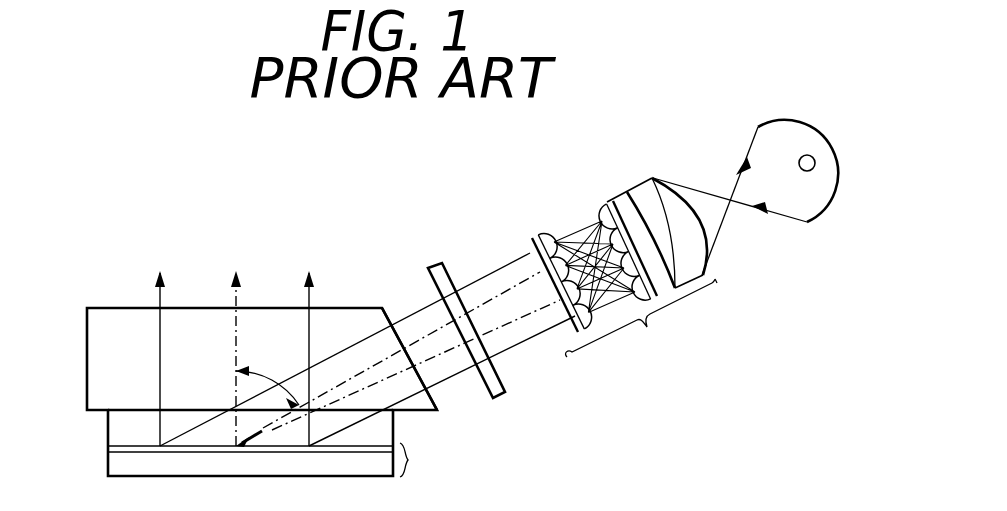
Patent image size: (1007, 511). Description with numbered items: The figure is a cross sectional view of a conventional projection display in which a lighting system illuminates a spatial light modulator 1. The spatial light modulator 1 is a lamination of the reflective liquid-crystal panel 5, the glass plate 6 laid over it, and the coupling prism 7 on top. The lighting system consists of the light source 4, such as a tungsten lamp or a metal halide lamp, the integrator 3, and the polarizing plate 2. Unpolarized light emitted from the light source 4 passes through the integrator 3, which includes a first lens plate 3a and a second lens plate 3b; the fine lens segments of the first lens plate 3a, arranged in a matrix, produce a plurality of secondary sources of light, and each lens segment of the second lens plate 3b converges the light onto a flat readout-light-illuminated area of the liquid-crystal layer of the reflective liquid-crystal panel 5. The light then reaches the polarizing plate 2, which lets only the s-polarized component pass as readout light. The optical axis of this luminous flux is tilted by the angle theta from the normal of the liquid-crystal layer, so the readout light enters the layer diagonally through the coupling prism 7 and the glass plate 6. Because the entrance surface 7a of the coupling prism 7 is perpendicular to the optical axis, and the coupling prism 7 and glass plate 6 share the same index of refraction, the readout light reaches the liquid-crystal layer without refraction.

The spatial light modulator 1 is at (119, 304).
The polarizing plate 2 is at (504, 393).
The integrator 3 is at (635, 268).
The first lens plate 3a is at (614, 194).
The second lens plate 3b is at (532, 235).
The light source 4 is at (816, 219).
The reflective liquid-crystal panel 5 is at (409, 460).
The glass plate 6 is at (387, 431).
The coupling prism 7 is at (338, 320).
The entrance surface 7a is at (393, 316).